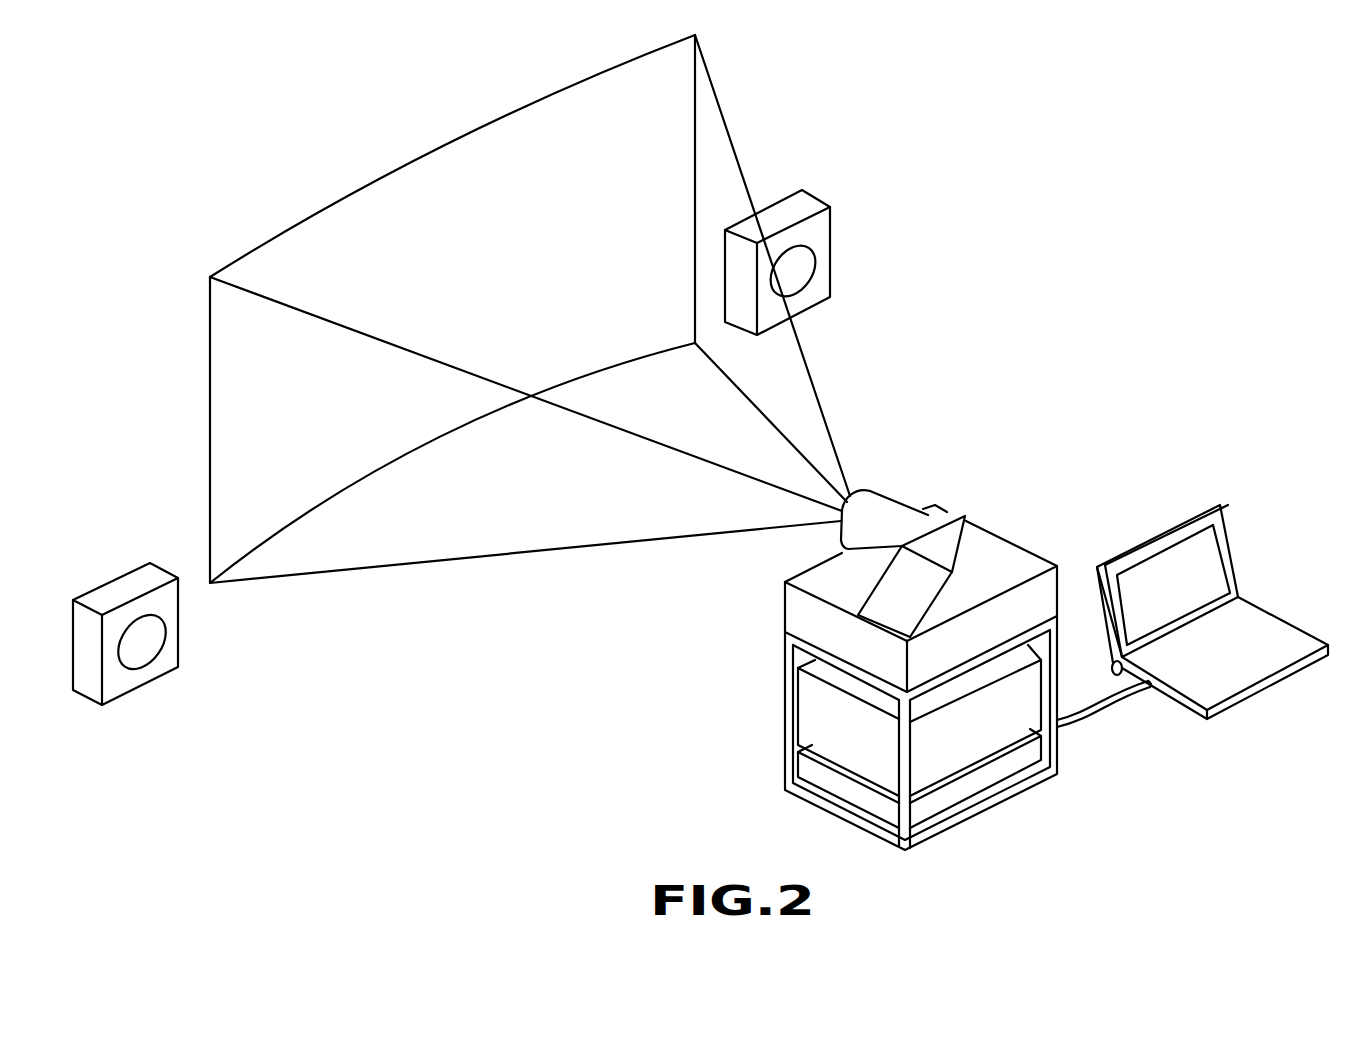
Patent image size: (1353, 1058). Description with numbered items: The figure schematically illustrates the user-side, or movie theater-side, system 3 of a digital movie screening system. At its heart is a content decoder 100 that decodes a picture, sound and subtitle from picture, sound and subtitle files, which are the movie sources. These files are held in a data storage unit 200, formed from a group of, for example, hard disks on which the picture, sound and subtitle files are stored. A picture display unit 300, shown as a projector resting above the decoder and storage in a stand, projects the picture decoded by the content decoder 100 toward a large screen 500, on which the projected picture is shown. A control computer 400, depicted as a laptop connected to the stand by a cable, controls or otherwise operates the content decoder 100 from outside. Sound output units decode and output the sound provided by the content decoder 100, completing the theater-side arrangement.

The user-side system 3 is at (1004, 197).
The content decoder 100 is at (813, 720).
The data storage unit 200 is at (813, 775).
The picture display unit 300 is at (977, 539).
The control computer 400 is at (1157, 546).
The screen 500 is at (425, 157).